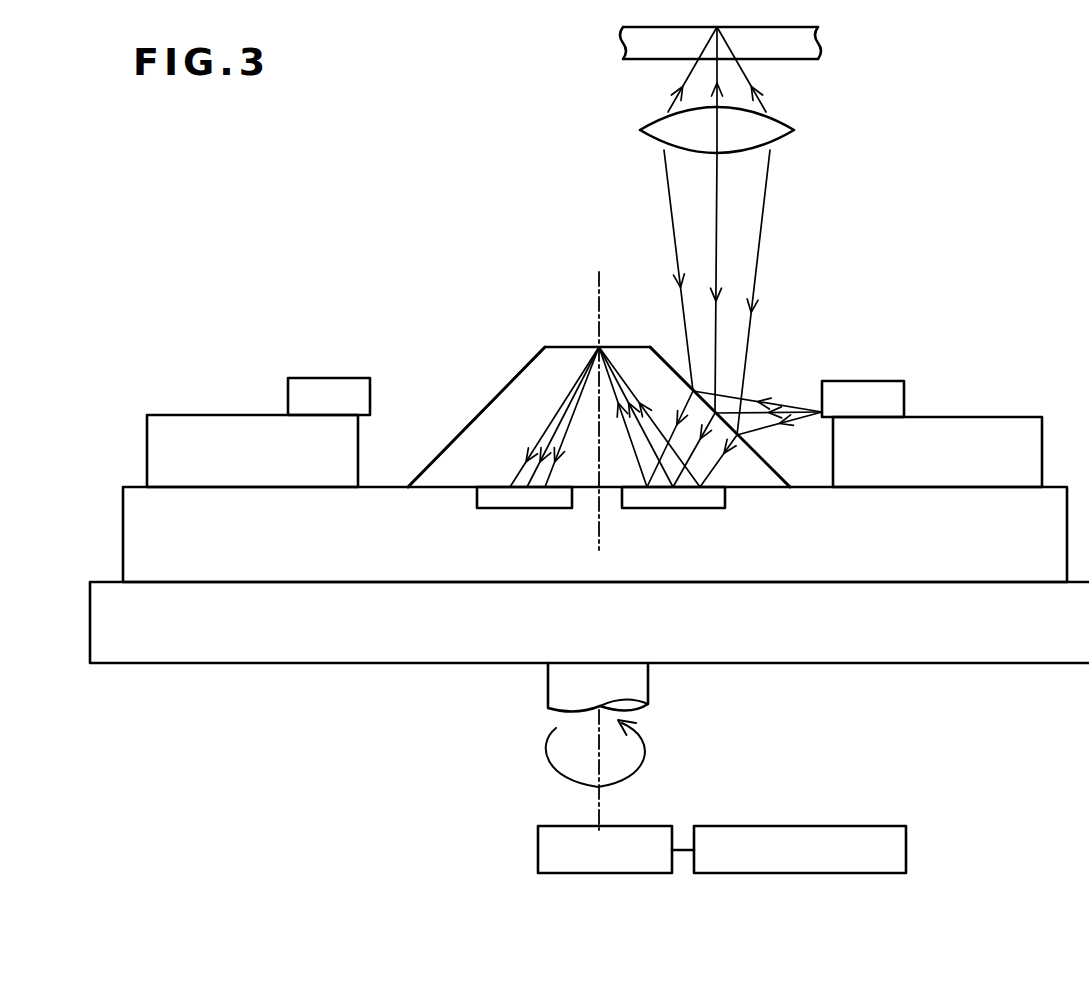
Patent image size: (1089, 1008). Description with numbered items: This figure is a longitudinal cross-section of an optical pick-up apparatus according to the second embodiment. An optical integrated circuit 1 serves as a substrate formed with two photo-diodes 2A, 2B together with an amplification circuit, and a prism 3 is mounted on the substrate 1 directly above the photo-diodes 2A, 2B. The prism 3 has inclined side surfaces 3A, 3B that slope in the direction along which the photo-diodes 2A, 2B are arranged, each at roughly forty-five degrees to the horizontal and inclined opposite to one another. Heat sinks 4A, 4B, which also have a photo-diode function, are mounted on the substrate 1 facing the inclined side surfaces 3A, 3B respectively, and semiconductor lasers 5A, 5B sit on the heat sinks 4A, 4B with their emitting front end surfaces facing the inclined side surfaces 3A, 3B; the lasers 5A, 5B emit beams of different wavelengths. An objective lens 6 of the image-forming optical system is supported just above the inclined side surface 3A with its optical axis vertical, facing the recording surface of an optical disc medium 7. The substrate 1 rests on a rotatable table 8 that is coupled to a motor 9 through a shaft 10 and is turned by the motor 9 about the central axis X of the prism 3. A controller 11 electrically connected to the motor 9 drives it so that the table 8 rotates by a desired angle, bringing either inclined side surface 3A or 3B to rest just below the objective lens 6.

The optical integrated circuit 1 is at (848, 545).
The photo-diode 2A is at (703, 500).
The photo-diode 2B is at (527, 497).
The prism 3 is at (568, 346).
The inclined side surface 3A is at (803, 462).
The inclined side surface 3B is at (456, 440).
The heat sink 4A is at (963, 445).
The heat sink 4B is at (183, 443).
The semiconductor laser 5A is at (852, 402).
The semiconductor laser 5B is at (345, 400).
The objective lens 6 is at (794, 130).
The optical disc medium 7 is at (806, 48).
The rotatable table 8 is at (292, 633).
The motor 9 is at (645, 826).
The shaft 10 is at (652, 675).
The controller 11 is at (790, 826).
The central axis X is at (599, 308).